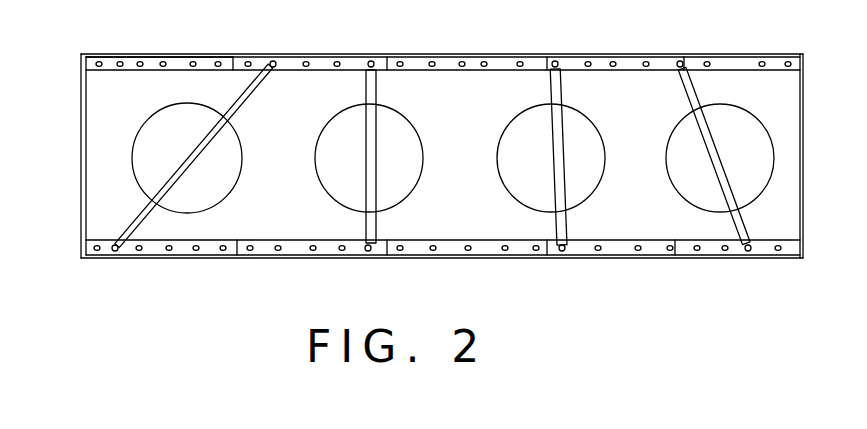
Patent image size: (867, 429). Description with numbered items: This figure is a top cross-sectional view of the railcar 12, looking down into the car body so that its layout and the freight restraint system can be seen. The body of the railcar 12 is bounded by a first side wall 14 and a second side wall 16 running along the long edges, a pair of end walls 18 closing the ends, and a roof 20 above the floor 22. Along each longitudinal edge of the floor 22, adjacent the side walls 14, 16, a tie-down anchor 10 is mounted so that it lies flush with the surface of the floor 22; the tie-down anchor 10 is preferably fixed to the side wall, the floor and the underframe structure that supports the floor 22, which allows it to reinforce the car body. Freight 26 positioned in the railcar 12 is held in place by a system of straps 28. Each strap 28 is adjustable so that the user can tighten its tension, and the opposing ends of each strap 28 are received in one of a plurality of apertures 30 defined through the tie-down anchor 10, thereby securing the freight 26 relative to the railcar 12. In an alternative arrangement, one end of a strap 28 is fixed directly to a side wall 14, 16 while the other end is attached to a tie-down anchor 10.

The tie-down anchor 10 is at (90, 61).
The railcar 12 is at (164, 62).
The first side wall 14 is at (313, 54).
The second side wall 16 is at (320, 258).
The end walls 18 is at (83, 180).
The roof 20 is at (195, 62).
The floor 22 is at (100, 145).
The freight 26 is at (232, 181).
The straps 28 is at (144, 215).
The apertures 30 is at (374, 62).